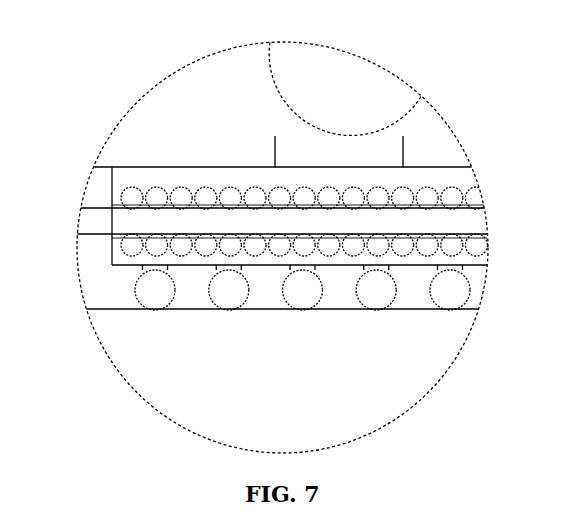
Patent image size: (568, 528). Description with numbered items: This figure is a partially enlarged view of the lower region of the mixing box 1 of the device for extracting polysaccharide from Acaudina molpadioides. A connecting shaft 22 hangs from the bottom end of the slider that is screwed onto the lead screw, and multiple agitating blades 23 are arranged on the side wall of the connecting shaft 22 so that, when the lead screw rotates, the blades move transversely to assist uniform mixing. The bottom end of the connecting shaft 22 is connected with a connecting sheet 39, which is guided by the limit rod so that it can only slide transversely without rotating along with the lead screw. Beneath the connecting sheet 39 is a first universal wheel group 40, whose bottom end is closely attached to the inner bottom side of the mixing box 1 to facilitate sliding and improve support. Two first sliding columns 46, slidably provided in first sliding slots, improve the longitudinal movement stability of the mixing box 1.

The mixing box 1 is at (143, 353).
The connecting shaft 22 is at (395, 158).
The agitating blades 23 is at (377, 92).
The connecting sheet 39 is at (145, 177).
The first universal wheel group 40 is at (452, 290).
The first sliding columns 46 is at (93, 218).